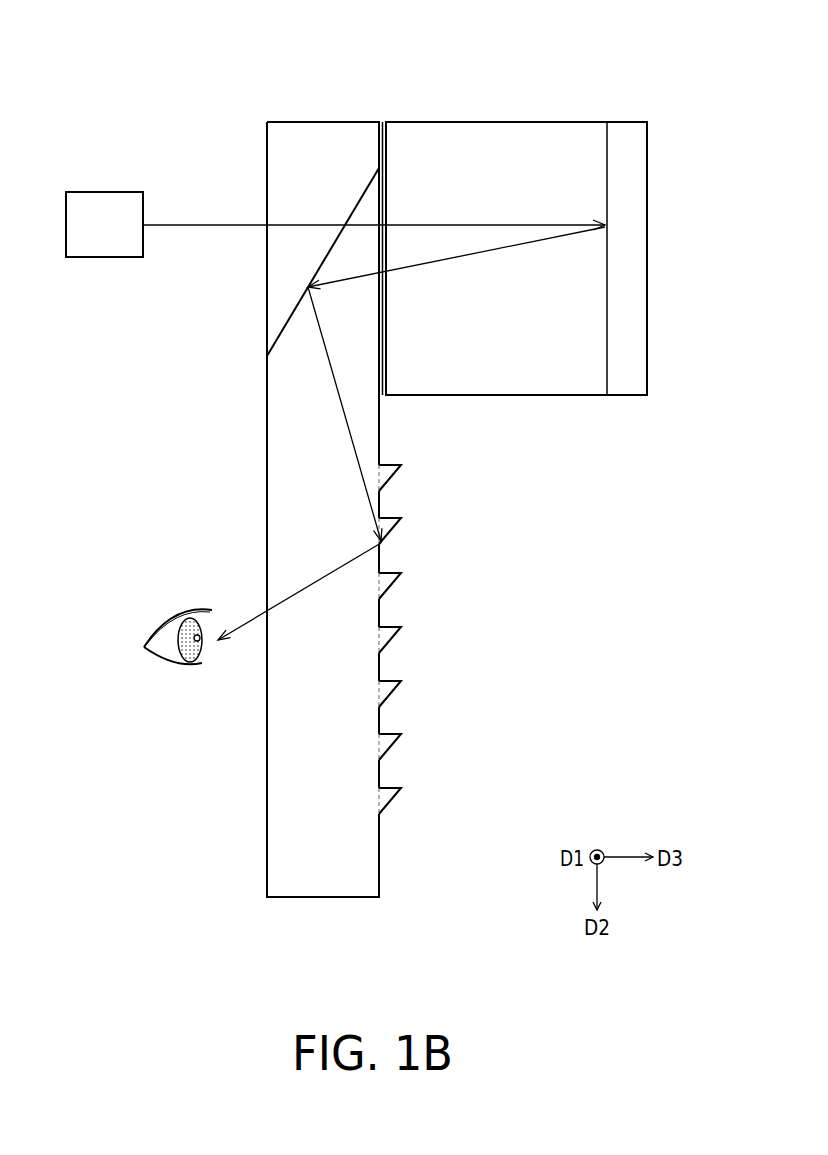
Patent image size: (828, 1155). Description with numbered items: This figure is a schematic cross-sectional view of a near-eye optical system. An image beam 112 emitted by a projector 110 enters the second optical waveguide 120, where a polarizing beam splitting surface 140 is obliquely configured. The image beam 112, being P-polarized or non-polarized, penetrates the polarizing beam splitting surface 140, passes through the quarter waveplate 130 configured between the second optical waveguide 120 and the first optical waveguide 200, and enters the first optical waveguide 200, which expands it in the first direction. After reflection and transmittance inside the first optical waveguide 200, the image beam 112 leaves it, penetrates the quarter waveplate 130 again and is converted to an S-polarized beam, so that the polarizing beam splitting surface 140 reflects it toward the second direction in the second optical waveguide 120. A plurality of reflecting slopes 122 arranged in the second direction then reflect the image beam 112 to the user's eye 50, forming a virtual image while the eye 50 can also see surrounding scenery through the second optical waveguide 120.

The eye 50 is at (178, 617).
The projector 110 is at (105, 217).
The image beam 112 is at (205, 222).
The second optical waveguide 120 is at (305, 724).
The reflecting slopes 122 is at (387, 646).
The quarter waveplate 130 is at (383, 122).
The polarizing beam splitting surface 140 is at (355, 203).
The first optical waveguide 200 is at (488, 170).